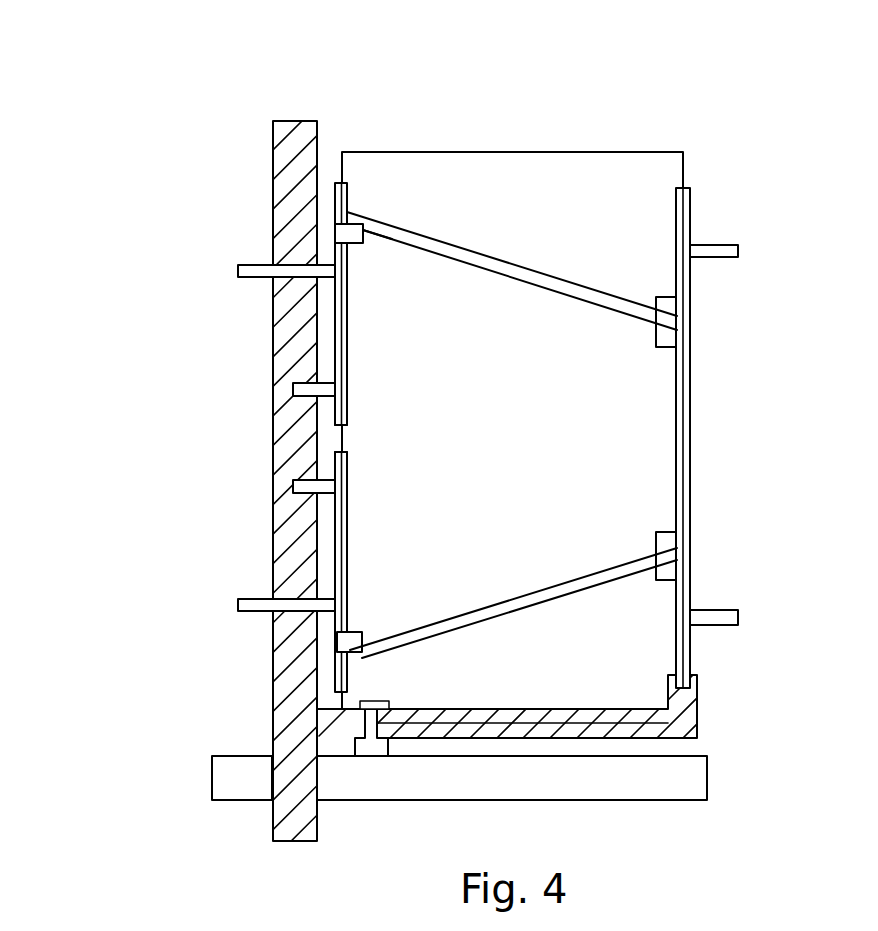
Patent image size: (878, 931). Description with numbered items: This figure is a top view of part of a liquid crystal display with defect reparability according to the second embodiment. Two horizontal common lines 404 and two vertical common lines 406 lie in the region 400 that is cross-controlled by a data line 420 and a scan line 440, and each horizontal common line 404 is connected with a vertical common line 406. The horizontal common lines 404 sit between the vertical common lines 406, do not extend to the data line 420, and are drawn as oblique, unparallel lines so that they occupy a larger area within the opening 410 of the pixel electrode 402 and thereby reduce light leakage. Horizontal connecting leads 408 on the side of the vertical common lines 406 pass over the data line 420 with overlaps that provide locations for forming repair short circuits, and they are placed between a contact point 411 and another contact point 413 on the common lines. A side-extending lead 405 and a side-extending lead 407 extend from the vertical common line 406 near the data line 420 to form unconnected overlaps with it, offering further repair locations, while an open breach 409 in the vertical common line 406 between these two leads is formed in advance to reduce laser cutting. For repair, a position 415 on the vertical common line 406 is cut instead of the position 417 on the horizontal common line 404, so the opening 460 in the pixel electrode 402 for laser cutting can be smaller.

The region 400 is at (498, 440).
The pixel electrode 402 is at (517, 177).
The horizontal common line 404 is at (603, 360).
The side-extending lead 405 is at (327, 383).
The vertical common line 406 is at (690, 432).
The side-extending lead 407 is at (327, 493).
The horizontal connecting lead 408 is at (238, 268).
The open breach 409 is at (344, 438).
The opening 410 is at (668, 297).
The contact point 411 is at (349, 210).
The contact point 413 is at (352, 663).
The position 415 is at (333, 234).
The position 417 is at (390, 220).
The data line 420 is at (273, 151).
The scan line 440 is at (707, 775).
The opening 460 is at (363, 240).